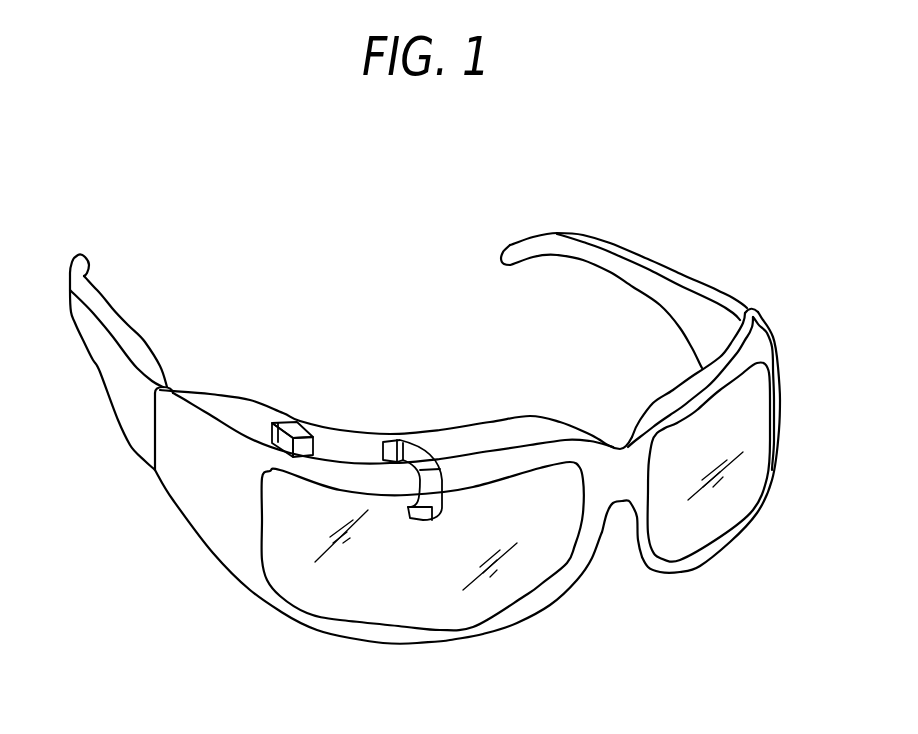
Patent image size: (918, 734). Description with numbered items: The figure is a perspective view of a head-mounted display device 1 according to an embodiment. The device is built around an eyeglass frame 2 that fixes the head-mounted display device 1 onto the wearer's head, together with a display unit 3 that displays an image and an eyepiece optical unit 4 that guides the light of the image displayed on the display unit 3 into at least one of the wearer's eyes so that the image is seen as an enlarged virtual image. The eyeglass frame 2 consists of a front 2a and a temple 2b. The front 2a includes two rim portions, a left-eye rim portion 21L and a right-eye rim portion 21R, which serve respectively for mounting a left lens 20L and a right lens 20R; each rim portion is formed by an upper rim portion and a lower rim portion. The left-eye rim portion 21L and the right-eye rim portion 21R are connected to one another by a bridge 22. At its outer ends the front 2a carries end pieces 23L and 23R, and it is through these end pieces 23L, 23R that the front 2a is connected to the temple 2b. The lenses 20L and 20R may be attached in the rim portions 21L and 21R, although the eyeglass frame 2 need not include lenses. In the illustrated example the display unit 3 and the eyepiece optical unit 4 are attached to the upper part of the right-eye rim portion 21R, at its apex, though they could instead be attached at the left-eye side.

The head-mounted display device 1 is at (314, 221).
The eyeglass frame 2 is at (203, 487).
The front 2a is at (620, 500).
The temple 2b is at (108, 368).
The display unit 3 is at (290, 428).
The eyepiece optical unit 4 is at (407, 440).
The right lens 20R is at (400, 590).
The left lens 20L is at (727, 490).
The right-eye rim portion 21R is at (483, 433).
The left-eye rim portion 21L is at (681, 388).
The bridge 22 is at (621, 462).
The end piece 23R is at (118, 409).
The end piece 23L is at (741, 309).